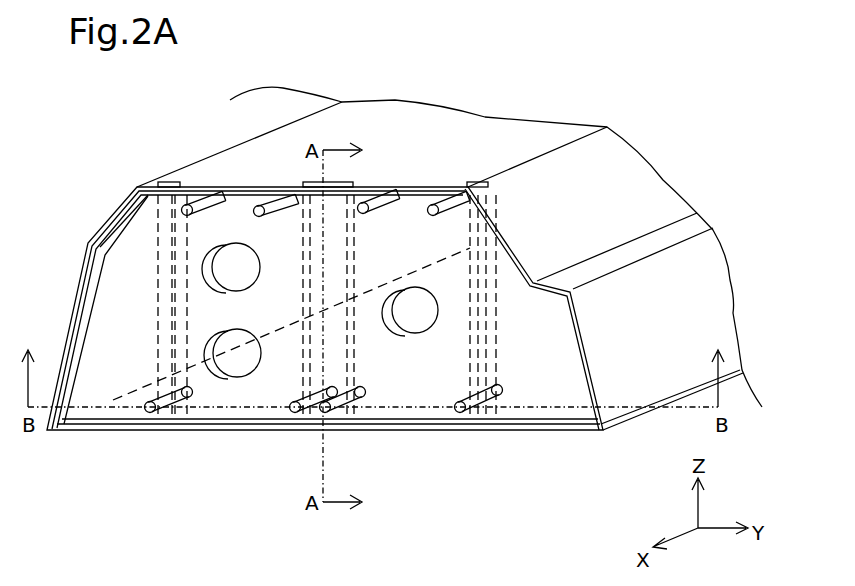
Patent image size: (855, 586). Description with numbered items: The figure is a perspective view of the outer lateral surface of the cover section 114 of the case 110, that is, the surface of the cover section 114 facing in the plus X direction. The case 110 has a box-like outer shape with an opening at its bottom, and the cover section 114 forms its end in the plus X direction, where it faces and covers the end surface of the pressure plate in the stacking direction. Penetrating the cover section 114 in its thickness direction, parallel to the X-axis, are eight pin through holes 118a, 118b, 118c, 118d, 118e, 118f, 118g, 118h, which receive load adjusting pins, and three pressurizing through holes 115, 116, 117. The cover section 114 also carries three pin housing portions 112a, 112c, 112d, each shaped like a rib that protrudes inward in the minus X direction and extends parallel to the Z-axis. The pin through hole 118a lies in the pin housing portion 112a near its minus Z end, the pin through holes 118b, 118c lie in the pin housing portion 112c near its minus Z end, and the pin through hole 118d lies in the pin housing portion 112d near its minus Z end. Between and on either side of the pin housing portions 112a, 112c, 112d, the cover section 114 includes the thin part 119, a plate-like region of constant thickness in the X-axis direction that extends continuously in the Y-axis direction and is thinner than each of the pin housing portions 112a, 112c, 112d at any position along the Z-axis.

The case 110 is at (128, 158).
The cover section 114 is at (123, 268).
The pressurizing through hole 115 is at (252, 286).
The pressurizing through hole 116 is at (254, 371).
The pressurizing through hole 117 is at (433, 318).
The pin housing portion 112a is at (195, 425).
The pin housing portion 112c is at (368, 400).
The pin housing portion 112d is at (500, 360).
The pin through hole 118a is at (146, 413).
The pin through hole 118b is at (293, 411).
The pin through hole 118c is at (323, 412).
The pin through hole 118d is at (462, 412).
The pin through hole 118e is at (187, 204).
The pin through hole 118f is at (258, 205).
The pin through hole 118g is at (366, 204).
The pin through hole 118h is at (436, 205).
The thin part 119 is at (133, 367).